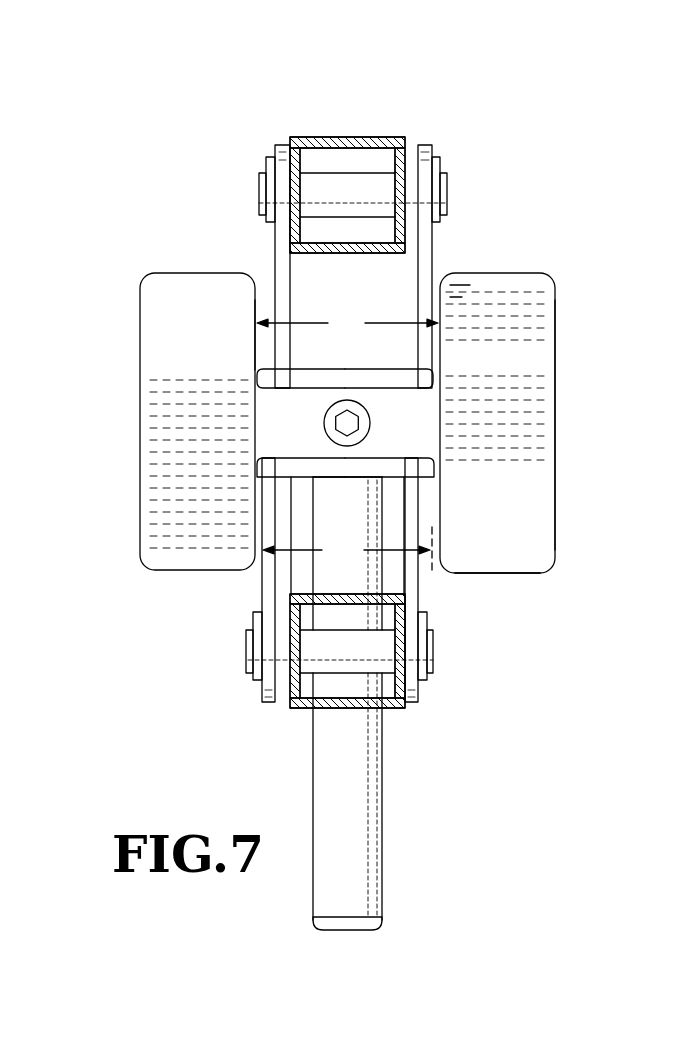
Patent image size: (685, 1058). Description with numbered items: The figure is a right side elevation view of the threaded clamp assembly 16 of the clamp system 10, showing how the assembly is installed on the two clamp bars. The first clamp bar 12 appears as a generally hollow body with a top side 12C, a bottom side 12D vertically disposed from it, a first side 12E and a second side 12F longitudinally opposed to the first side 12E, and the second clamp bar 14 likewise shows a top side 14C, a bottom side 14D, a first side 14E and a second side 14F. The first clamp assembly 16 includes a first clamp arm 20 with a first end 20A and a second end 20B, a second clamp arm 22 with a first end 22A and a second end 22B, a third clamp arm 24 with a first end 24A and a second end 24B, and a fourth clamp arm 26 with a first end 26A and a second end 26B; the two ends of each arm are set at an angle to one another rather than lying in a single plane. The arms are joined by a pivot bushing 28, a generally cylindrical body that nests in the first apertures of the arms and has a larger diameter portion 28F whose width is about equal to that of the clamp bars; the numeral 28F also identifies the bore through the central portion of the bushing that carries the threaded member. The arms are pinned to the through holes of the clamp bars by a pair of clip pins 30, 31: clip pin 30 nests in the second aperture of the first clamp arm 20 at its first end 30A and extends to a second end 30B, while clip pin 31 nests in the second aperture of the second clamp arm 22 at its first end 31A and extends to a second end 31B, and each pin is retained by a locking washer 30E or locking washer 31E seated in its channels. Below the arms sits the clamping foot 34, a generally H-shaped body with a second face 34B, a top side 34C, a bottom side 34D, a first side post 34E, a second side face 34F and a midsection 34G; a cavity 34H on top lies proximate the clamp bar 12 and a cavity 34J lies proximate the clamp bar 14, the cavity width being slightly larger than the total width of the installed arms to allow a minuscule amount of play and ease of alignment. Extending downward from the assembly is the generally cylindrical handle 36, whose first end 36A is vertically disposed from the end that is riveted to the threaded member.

The clamp system 10 is at (337, 499).
The first clamp bar 12 is at (353, 181).
The top side 12C is at (358, 146).
The bottom side 12D is at (363, 254).
The first side 12E is at (290, 233).
The second side 12F is at (432, 233).
The second clamp bar 14 is at (328, 681).
The top side 14C is at (330, 593).
The bottom side 14D is at (328, 681).
The first side 14E is at (290, 619).
The second side 14F is at (405, 620).
The first clamp assembly 16 is at (324, 687).
The first clamp arm 20 is at (201, 248).
The first end 20A is at (283, 383).
The second end 20B is at (280, 140).
The second clamp arm 22 is at (201, 596).
The first end 22A is at (250, 456).
The second end 22B is at (265, 712).
The third clamp arm 24 is at (488, 605).
The first end 24A is at (433, 457).
The second end 24B is at (417, 713).
The fourth clamp arm 26 is at (488, 253).
The first end 26A is at (428, 382).
The second end 26B is at (432, 135).
The pivot bushing 28 is at (200, 503).
The larger diameter portion 28F is at (336, 487).
The clip pin 30 is at (318, 172).
The first end 30A is at (250, 194).
The second end 30B is at (450, 196).
The locking washer 30E is at (262, 160).
The clip pin 31 is at (318, 651).
The first end 31A is at (240, 654).
The second end 31B is at (434, 648).
The locking washer 31E is at (255, 662).
The clamping foot 34 is at (345, 417).
The second face 34B is at (527, 368).
The top side 34C is at (515, 272).
The bottom side 34D is at (522, 575).
The first side post 34E is at (184, 270).
The second side face 34F is at (556, 325).
The midsection 34G is at (290, 424).
The cavity 34H is at (263, 344).
The cavity 34J is at (430, 508).
The handle 36 is at (407, 707).
The first end 36A is at (382, 930).